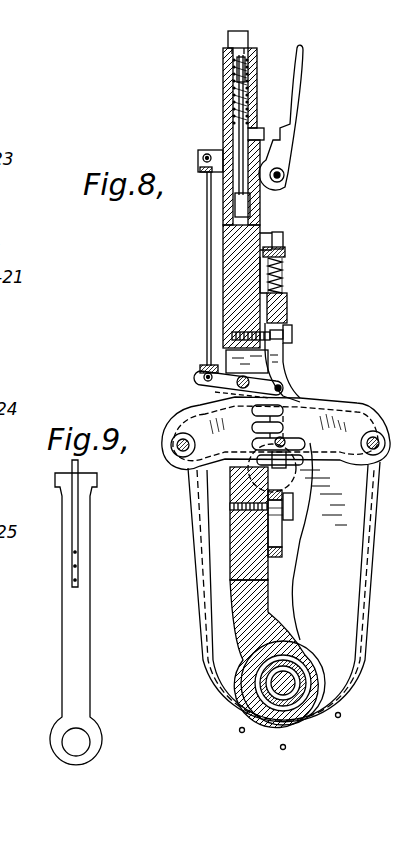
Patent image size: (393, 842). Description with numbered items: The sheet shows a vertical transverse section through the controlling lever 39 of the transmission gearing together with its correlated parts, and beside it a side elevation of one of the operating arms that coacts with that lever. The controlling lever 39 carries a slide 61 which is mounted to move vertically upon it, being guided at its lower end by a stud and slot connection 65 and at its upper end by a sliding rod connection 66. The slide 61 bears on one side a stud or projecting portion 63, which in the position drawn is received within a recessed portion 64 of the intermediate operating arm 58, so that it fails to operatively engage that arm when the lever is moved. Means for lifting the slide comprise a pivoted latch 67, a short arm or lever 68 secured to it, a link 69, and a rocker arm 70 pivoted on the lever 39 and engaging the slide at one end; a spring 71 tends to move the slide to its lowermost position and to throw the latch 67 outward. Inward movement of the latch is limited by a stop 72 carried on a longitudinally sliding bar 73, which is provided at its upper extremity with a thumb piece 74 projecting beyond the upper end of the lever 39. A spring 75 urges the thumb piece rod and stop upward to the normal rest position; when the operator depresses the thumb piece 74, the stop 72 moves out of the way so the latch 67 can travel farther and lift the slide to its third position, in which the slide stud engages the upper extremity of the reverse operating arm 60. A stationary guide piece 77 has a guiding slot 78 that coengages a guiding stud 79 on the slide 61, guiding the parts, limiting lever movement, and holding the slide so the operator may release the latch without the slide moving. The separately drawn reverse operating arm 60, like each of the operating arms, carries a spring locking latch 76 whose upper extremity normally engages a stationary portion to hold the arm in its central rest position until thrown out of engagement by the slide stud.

In FIG. 8, the controlling lever 39 is at (232, 300).
In FIG. 8, the intermediate operating arm 58 is at (295, 592).
In FIG. 9, the reverse operating arm 60 is at (89, 616).
In FIG. 8, the slide 61 is at (280, 363).
In FIG. 8, the stud or projecting portion 63 is at (296, 476).
In FIG. 8, the recessed portion 64 is at (303, 461).
In FIG. 8, the stud and slot connection 65 is at (293, 507).
In FIG. 8, the sliding rod connection 66 is at (284, 245).
In FIG. 8, the pivoted latch 67 is at (296, 123).
In FIG. 8, the short arm or lever 68 is at (218, 156).
In FIG. 8, the link 69 is at (206, 244).
In FIG. 8, the rocker arm 70 is at (215, 381).
In FIG. 8, the spring 71 is at (284, 276).
In FIG. 8, the stop 72 is at (263, 135).
In FIG. 8, the longitudinally sliding bar 73 is at (233, 93).
In FIG. 8, the thumb piece 74 is at (248, 40).
In FIG. 8, the spring 75 is at (233, 70).
In FIG. 9, the spring locking latch 76 is at (79, 519).
In FIG. 8, the stationary guide piece 77 is at (338, 424).
In FIG. 8, the guiding slot 78 is at (283, 438).
In FIG. 8, the guiding stud 79 is at (306, 402).